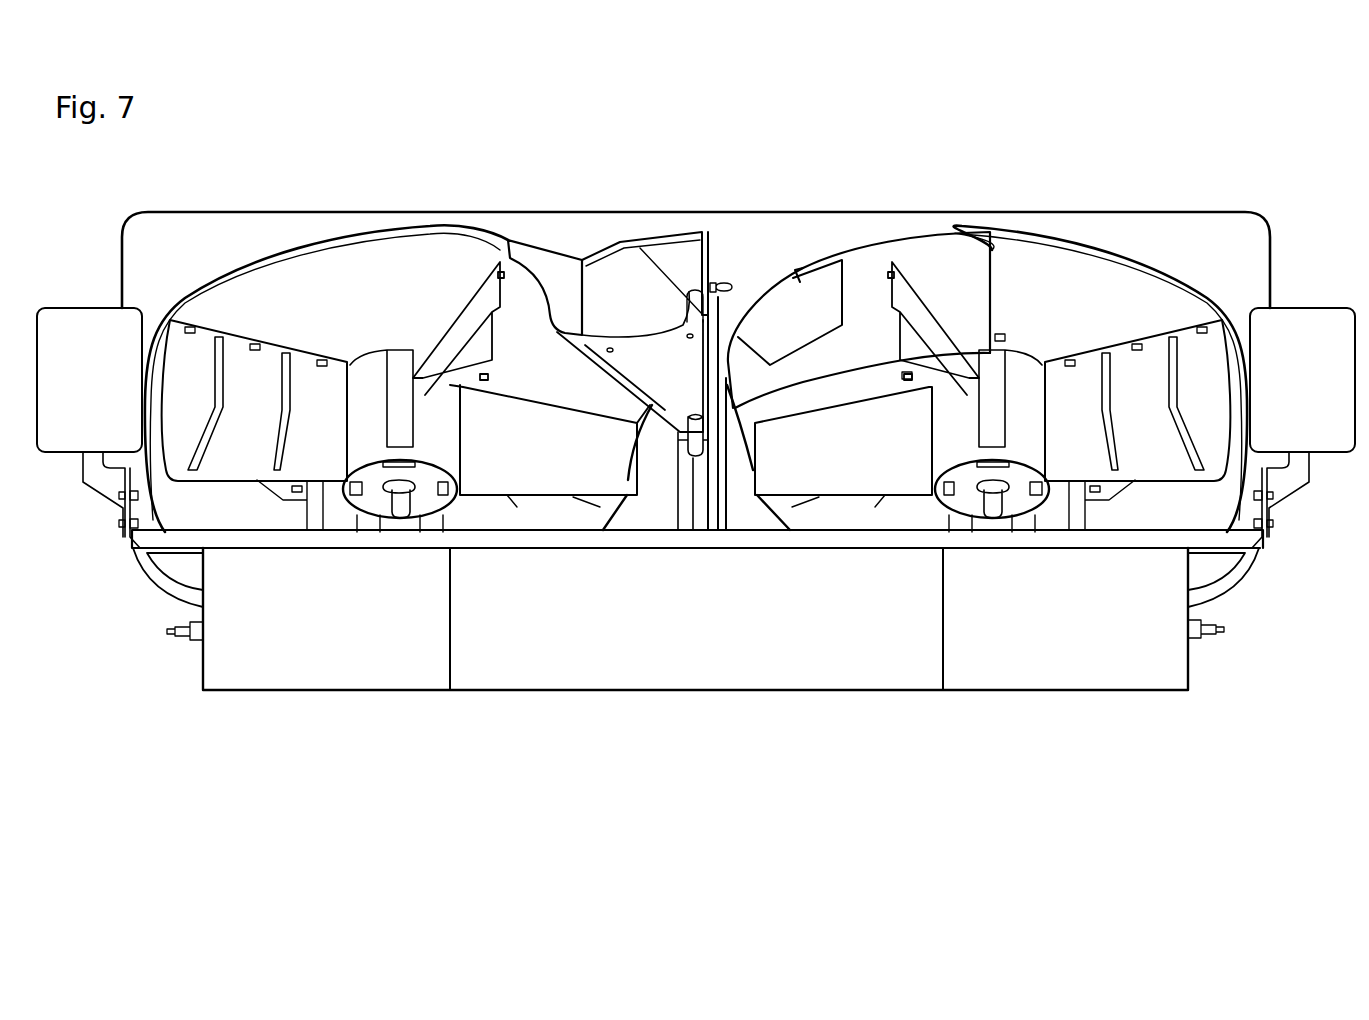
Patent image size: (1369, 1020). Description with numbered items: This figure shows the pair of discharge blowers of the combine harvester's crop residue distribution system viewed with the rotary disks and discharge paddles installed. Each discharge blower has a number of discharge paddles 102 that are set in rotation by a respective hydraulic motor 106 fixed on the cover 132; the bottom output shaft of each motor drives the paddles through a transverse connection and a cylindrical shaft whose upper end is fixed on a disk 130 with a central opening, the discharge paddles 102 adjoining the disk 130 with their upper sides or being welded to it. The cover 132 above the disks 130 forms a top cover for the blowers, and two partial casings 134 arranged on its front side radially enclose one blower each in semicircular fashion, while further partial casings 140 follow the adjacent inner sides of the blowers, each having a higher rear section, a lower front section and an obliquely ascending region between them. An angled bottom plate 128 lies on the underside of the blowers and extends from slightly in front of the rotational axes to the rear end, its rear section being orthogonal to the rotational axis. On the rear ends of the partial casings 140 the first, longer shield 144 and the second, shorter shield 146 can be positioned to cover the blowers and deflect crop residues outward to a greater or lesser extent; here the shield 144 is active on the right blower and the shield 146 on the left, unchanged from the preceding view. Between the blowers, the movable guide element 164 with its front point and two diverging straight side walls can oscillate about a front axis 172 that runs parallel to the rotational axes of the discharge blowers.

The discharge paddles 102 is at (1205, 363).
The hydraulic motor 106 is at (420, 473).
The bottom plate 128 is at (817, 653).
The disk 130 is at (335, 298).
The cover 132 is at (1065, 212).
The partial casings 134 is at (623, 503).
The partial casings 140 is at (813, 293).
The first shield 144 is at (943, 270).
The second shield 146 is at (560, 253).
The movable guide element 164 is at (713, 262).
The front axis 172 is at (697, 456).